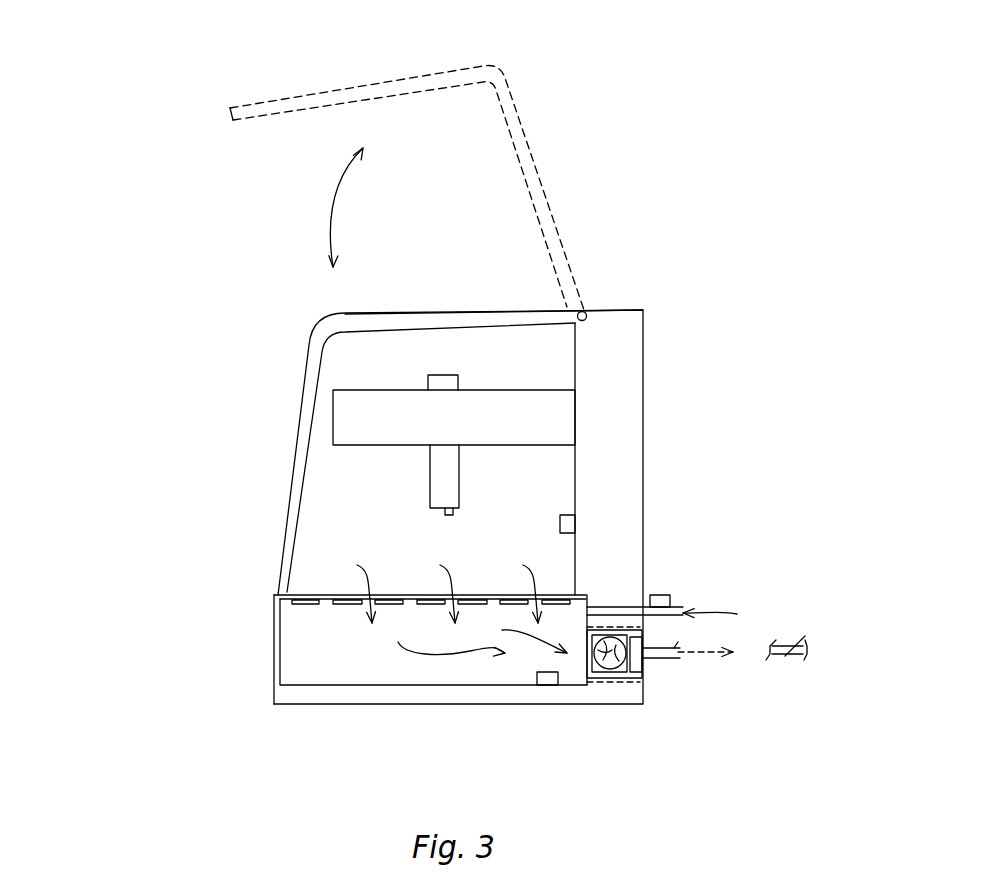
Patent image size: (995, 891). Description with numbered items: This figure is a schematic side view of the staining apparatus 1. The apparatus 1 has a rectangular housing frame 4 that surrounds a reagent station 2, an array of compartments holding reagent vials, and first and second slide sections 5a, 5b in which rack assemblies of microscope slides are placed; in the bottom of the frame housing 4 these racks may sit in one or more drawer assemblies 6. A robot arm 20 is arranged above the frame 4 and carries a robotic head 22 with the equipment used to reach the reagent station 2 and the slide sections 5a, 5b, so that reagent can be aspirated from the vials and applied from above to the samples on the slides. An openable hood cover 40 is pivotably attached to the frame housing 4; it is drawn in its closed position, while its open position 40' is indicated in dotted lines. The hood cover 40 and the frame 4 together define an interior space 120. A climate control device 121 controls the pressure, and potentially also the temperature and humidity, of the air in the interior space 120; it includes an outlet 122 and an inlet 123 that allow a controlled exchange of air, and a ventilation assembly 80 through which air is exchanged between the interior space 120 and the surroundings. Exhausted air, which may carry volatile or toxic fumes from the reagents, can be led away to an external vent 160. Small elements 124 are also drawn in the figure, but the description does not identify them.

The staining apparatus 1 is at (707, 235).
The reagent station 2 is at (430, 597).
The housing frame 4 is at (623, 475).
The first slide section 5a is at (318, 588).
The second slide section 5b is at (431, 602).
The drawer assembly 6 is at (312, 637).
The robot arm 20 is at (505, 403).
The robotic head 22 is at (443, 475).
The hood cover 40 is at (396, 452).
The open position of hood cover 40' is at (444, 188).
The ventilation assembly 80 is at (610, 660).
The interior space 120 is at (449, 571).
The climate control device 121 is at (670, 693).
The outlet 122 is at (668, 653).
The inlet 123 is at (687, 604).
The sensor 124 is at (575, 523).
The vent 160 is at (803, 630).